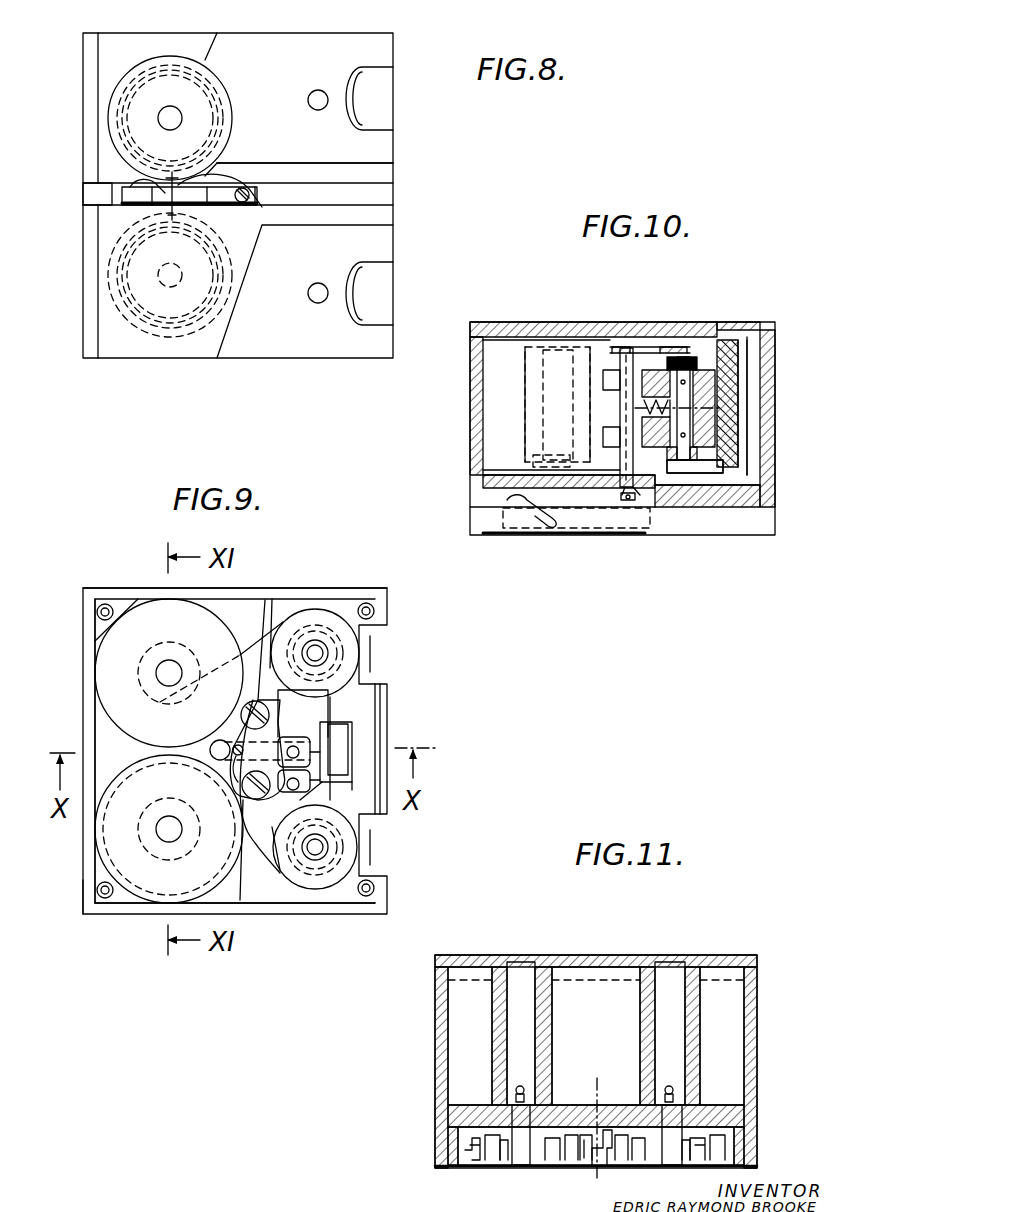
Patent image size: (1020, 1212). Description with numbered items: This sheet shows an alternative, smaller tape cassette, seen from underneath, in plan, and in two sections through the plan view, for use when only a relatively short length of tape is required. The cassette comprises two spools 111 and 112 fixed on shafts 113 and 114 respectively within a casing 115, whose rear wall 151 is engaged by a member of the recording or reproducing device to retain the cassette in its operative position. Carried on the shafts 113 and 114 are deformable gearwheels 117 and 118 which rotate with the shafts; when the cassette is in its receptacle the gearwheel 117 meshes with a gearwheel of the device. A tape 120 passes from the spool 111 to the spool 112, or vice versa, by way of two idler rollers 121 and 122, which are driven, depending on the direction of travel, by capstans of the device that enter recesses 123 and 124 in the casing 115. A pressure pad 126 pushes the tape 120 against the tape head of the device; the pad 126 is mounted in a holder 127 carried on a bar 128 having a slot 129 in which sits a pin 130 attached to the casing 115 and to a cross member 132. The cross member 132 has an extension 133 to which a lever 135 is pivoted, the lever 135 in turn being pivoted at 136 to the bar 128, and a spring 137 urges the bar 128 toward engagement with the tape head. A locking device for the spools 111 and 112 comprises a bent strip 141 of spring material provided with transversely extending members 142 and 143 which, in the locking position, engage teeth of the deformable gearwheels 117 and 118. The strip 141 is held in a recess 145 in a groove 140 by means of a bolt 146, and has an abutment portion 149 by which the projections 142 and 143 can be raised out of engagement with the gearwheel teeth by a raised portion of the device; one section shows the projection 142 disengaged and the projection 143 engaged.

In FIG. 9, the spool 111 is at (137, 623).
In FIG. 11, the spool 111 is at (688, 1040).
In FIG. 9, the spool 112 is at (141, 869).
In FIG. 11, the spool 112 is at (500, 1036).
In FIG. 9, the shaft 113 is at (173, 645).
In FIG. 11, the shaft 113 is at (668, 977).
In FIG. 9, the shaft 114 is at (165, 826).
In FIG. 11, the shaft 114 is at (523, 990).
In FIG. 9, the casing 115 is at (103, 593).
In FIG. 11, the deformable gearwheel 117 is at (686, 1166).
In FIG. 11, the deformable gearwheel 118 is at (497, 1170).
In FIG. 9, the tape 120 is at (356, 690).
In FIG. 8, the idler roller 121 is at (355, 293).
In FIG. 9, the idler roller 121 is at (349, 670).
In FIG. 8, the idler roller 122 is at (355, 95).
In FIG. 9, the idler roller 122 is at (344, 862).
In FIG. 9, the recess 123 is at (376, 646).
In FIG. 9, the recess 124 is at (376, 838).
In FIG. 10, the pressure pad 126 is at (725, 470).
In FIG. 9, the pressure pad 126 is at (342, 759).
In FIG. 10, the holder 127 is at (722, 353).
In FIG. 9, the holder 127 is at (328, 780).
In FIG. 10, the bar 128 is at (703, 463).
In FIG. 9, the bar 128 is at (318, 752).
In FIG. 10, the slot 129 is at (608, 433).
In FIG. 9, the slot 129 is at (239, 749).
In FIG. 10, the pin 130 is at (625, 363).
In FIG. 9, the pin 130 is at (236, 756).
In FIG. 9, the cross member 132 is at (243, 730).
In FIG. 9, the extension 133 is at (232, 766).
In FIG. 9, the lever 135 is at (265, 600).
In FIG. 10, the pivot 136 is at (683, 355).
In FIG. 9, the pivot 136 is at (293, 746).
In FIG. 10, the spring 137 is at (650, 400).
In FIG. 8, the groove 140 is at (368, 191).
In FIG. 8, the bent strip 141 is at (143, 193).
In FIG. 10, the bent strip 141 is at (510, 513).
In FIG. 8, the transversely extending member 142 is at (217, 207).
In FIG. 11, the transversely extending member 142 is at (614, 1140).
In FIG. 8, the transversely extending member 143 is at (172, 222).
In FIG. 11, the transversely extending member 143 is at (572, 1140).
In FIG. 10, the recess 145 is at (645, 510).
In FIG. 8, the bolt 146 is at (245, 192).
In FIG. 10, the bolt 146 is at (632, 507).
In FIG. 8, the abutment portion 149 is at (185, 192).
In FIG. 10, the abutment portion 149 is at (553, 522).
In FIG. 9, the rear wall 151 is at (86, 893).